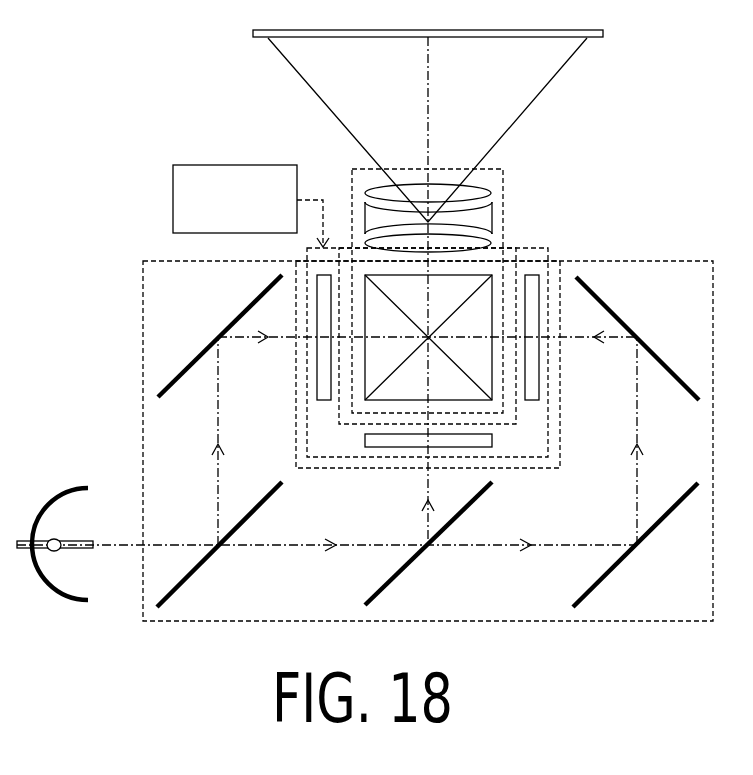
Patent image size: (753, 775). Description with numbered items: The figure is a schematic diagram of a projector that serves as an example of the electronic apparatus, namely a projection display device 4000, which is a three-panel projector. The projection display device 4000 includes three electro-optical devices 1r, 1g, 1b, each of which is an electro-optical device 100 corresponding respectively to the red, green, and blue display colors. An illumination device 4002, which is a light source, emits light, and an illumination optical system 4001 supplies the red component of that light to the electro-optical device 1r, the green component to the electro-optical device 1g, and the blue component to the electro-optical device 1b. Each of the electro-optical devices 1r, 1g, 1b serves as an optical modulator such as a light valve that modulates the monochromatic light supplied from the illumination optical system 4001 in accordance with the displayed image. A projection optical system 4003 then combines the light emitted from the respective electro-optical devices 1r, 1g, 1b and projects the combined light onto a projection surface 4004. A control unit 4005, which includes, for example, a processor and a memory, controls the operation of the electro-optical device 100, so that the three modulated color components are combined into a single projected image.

The projection display device 4000 is at (147, 114).
The illumination optical system 4001 is at (678, 258).
The illumination device 4002 is at (68, 488).
The projection optical system 4003 is at (507, 210).
The projection surface 4004 is at (478, 38).
The control unit 4005 is at (173, 210).
The electro-optical device 1r is at (317, 386).
The electro-optical device 1g is at (373, 447).
The electro-optical device 1b is at (539, 376).
The electro-optical device 100 is at (428, 403).